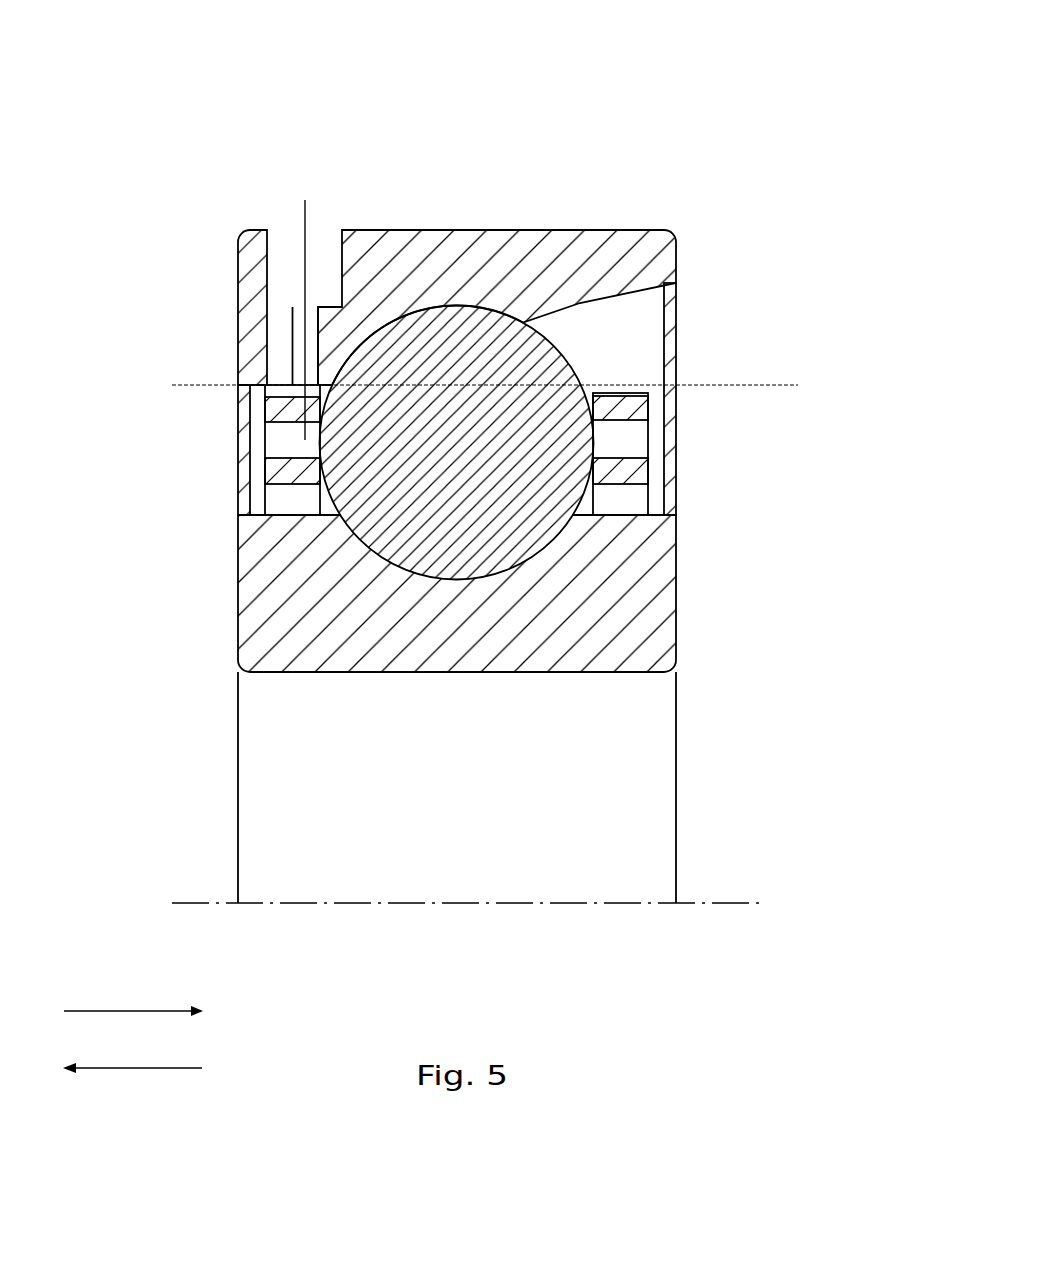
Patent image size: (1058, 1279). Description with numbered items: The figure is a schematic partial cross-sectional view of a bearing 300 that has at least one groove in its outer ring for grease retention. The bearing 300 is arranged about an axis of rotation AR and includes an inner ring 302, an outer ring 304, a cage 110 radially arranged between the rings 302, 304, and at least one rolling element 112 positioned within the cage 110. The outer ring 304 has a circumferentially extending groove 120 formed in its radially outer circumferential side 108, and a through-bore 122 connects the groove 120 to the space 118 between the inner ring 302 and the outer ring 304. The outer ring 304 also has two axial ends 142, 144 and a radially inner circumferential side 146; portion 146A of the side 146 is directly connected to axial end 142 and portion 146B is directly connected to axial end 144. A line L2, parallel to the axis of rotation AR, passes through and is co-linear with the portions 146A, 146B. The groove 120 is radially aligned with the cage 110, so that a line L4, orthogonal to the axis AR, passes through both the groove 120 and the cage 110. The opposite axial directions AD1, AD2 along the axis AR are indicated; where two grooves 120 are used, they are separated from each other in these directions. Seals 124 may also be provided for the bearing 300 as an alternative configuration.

The bearing 300 is at (787, 50).
The inner ring 302 is at (500, 672).
The outer ring 304 is at (402, 220).
The radially outer circumferential side 108 is at (497, 229).
The cage 110 is at (276, 380).
The rolling element 112 is at (530, 355).
The space 118 is at (283, 498).
The circumferentially extending groove 120 is at (282, 253).
The through-bore 122 is at (238, 307).
The seals 124 is at (238, 452).
The axial end 142 is at (297, 318).
The axial end 144 is at (676, 322).
The radially inner circumferential side 146 is at (394, 306).
The portion 146A is at (266, 383).
The portion 146B is at (648, 390).
The line L2 is at (798, 385).
The line L4 is at (305, 212).
The axis of rotation AR is at (723, 903).
The axial direction AD1 is at (107, 1011).
The axial direction AD2 is at (129, 1068).